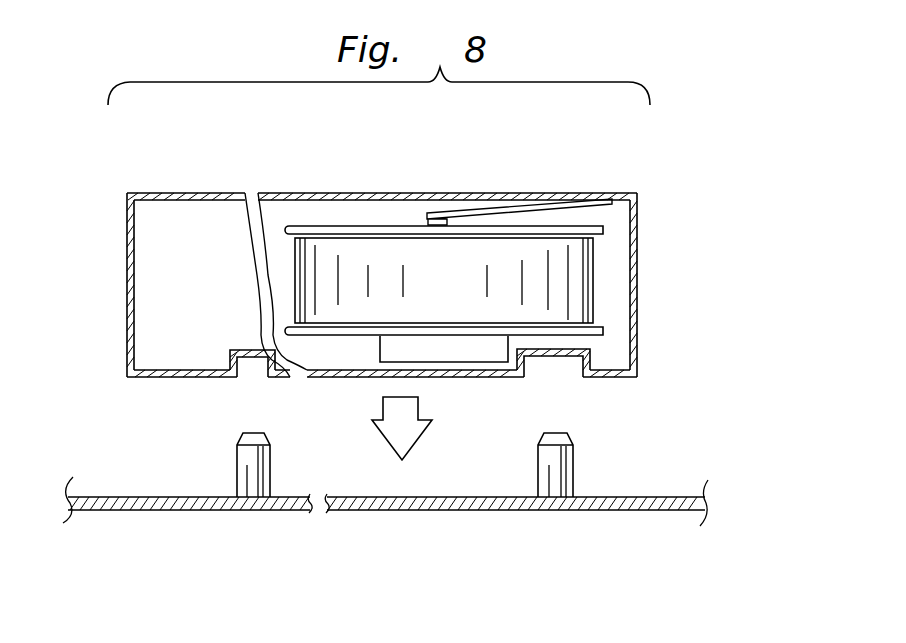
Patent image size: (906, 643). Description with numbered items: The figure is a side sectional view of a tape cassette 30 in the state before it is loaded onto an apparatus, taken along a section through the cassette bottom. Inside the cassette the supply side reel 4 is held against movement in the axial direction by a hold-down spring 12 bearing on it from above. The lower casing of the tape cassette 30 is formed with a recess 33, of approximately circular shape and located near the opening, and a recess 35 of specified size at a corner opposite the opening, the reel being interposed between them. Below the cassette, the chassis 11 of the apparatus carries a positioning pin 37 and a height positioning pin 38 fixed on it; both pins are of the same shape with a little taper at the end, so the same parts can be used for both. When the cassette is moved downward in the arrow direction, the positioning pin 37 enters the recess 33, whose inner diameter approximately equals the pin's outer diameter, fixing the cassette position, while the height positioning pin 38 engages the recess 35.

The supply side reel 4 is at (598, 225).
The chassis 11 is at (422, 512).
The hold-down spring 12 is at (466, 208).
The tape cassette 30 is at (637, 279).
The recess 33 is at (252, 343).
The recess 35 is at (588, 342).
The positioning pin 37 is at (245, 511).
The height positioning pin 38 is at (552, 510).